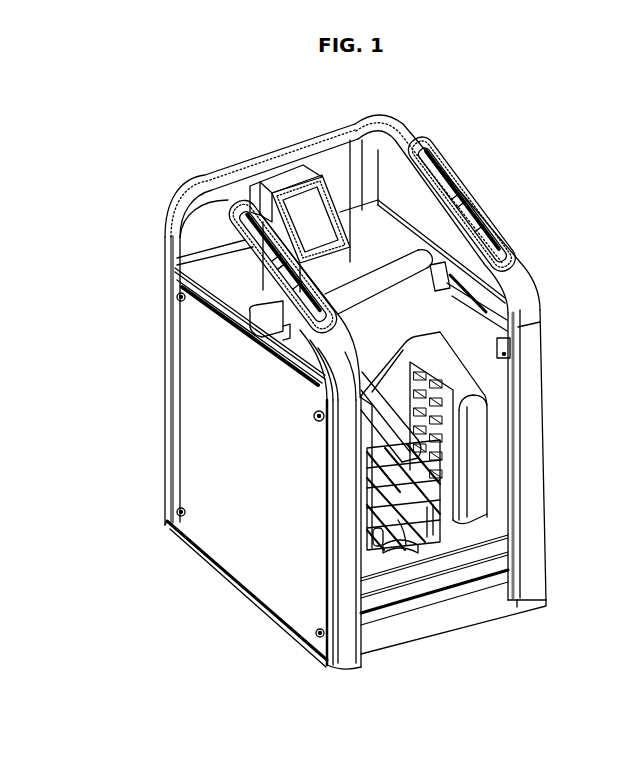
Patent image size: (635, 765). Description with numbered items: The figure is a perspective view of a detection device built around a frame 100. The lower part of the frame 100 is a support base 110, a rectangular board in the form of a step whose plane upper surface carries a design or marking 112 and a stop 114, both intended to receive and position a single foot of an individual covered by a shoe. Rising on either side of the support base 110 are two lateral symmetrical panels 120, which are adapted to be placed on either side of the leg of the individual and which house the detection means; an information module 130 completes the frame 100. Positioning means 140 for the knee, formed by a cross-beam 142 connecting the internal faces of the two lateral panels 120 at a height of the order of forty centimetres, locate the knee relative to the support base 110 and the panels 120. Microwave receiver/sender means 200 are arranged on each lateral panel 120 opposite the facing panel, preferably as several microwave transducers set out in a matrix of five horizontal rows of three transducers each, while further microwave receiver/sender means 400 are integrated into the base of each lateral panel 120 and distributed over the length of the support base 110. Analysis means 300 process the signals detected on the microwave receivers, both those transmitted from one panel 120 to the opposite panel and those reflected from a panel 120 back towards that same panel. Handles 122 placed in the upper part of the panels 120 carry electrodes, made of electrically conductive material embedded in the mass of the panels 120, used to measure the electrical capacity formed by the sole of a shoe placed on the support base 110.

The frame 100 is at (356, 411).
The support base 110 is at (447, 618).
The design or marking 112 is at (382, 533).
The stop 114 is at (408, 552).
The lateral symmetrical panels 120 is at (348, 494).
The handles 122 is at (266, 258).
The information module 130 is at (312, 218).
The positioning means 140 is at (379, 260).
The cross-beam 142 is at (423, 277).
The microwave receiver/sender means 200 is at (408, 405).
The analysis means 300 is at (253, 199).
The microwave receiver/sender means 400 is at (372, 561).